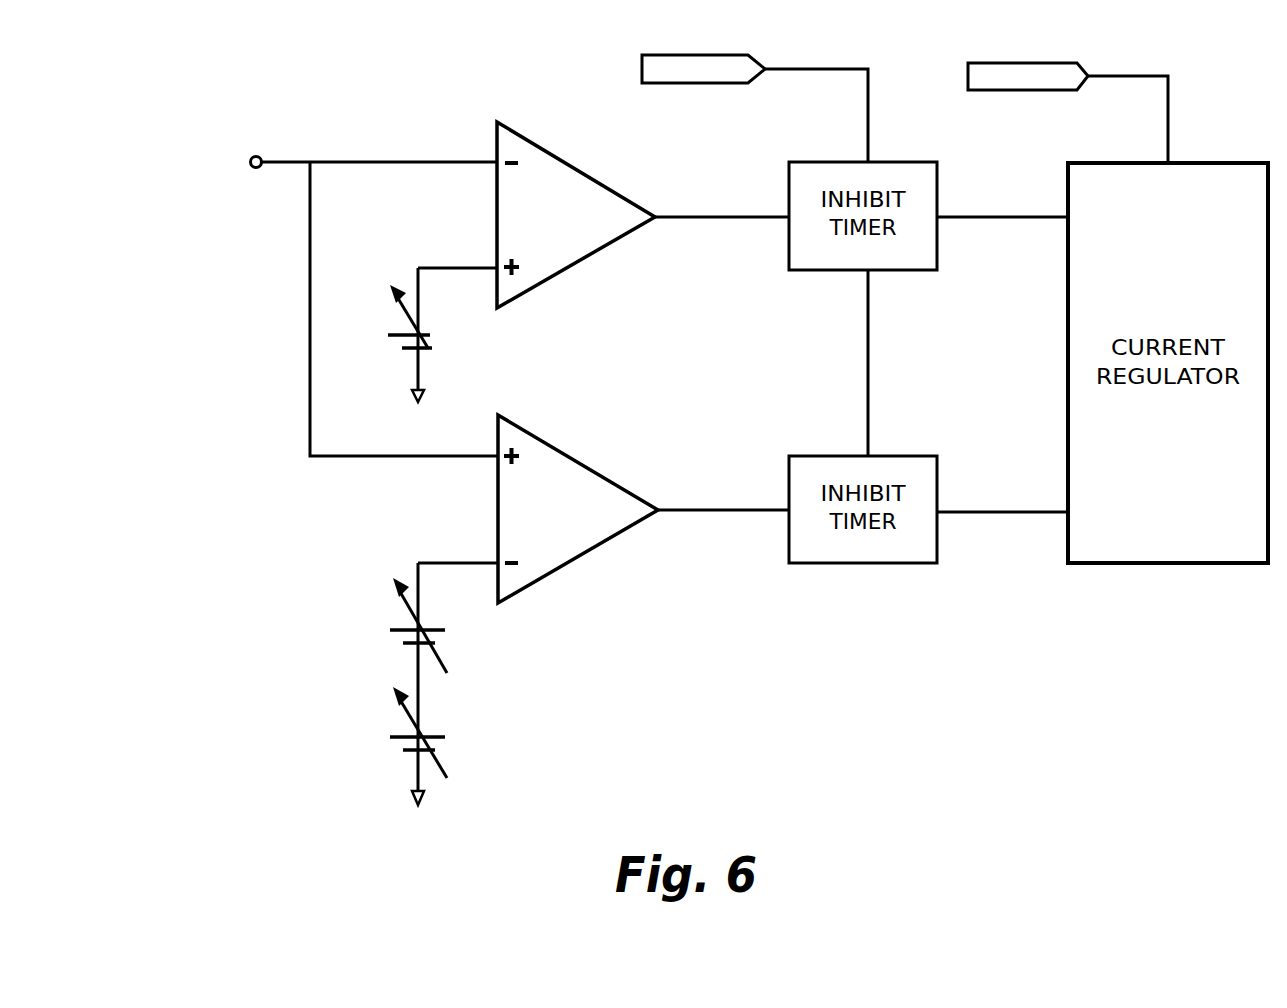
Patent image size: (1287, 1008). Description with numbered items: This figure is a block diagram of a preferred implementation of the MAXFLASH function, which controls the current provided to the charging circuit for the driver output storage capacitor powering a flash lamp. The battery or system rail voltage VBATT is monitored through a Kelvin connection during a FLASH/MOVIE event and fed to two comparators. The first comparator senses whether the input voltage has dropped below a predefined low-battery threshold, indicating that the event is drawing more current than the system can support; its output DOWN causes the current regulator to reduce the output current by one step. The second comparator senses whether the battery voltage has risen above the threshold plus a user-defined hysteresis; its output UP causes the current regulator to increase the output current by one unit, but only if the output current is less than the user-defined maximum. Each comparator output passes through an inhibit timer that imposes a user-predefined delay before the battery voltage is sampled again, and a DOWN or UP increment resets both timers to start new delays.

The battery voltage input VBATT is at (309, 284).
The DOWN comparator output DOWN is at (722, 199).
The UP comparator output UP is at (723, 492).